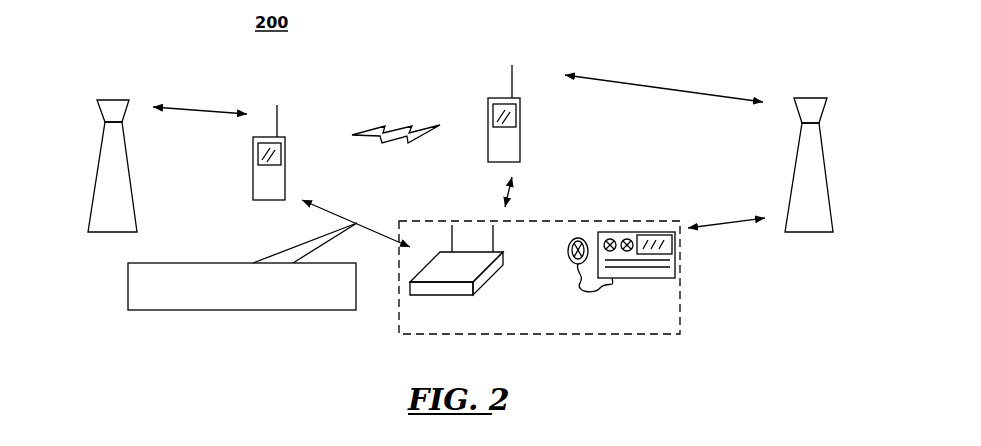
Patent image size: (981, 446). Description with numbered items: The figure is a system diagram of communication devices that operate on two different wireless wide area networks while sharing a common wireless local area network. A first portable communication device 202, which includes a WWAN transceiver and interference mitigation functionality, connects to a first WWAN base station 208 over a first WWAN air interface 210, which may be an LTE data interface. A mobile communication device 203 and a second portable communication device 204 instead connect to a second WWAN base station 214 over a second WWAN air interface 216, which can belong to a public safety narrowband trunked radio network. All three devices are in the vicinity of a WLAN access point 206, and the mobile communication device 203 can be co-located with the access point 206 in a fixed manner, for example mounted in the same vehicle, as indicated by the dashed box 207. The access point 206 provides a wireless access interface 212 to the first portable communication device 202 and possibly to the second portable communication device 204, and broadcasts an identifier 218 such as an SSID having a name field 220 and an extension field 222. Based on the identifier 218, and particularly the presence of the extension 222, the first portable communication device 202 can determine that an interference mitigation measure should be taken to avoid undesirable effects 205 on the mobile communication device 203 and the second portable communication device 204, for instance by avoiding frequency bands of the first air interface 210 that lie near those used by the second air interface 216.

The first portable communication device 202 is at (287, 162).
The mobile communication device 203 is at (640, 278).
The second portable communication device 204 is at (487, 122).
The undesirable effects 205 is at (405, 125).
The WLAN access point 206 is at (503, 265).
The dashed box 207 is at (663, 336).
The first WWAN base station 208 is at (97, 163).
The first WWAN air interface 210 is at (210, 108).
The wireless access interface 212 is at (508, 189).
The second WWAN base station 214 is at (788, 203).
The second WWAN air interface 216 is at (683, 90).
The identifier 218 is at (218, 263).
The name field 220 is at (247, 298).
The extension field 222 is at (302, 298).